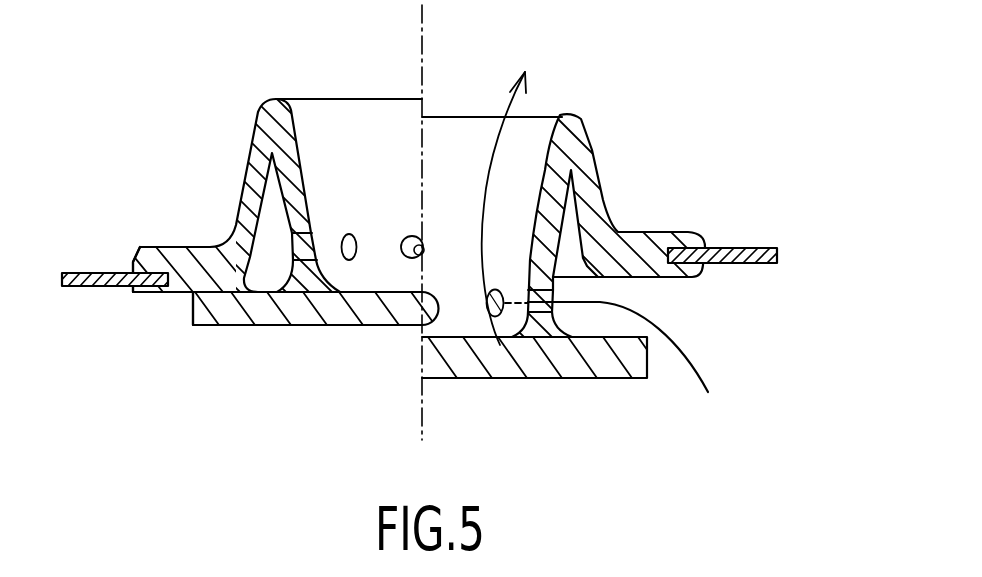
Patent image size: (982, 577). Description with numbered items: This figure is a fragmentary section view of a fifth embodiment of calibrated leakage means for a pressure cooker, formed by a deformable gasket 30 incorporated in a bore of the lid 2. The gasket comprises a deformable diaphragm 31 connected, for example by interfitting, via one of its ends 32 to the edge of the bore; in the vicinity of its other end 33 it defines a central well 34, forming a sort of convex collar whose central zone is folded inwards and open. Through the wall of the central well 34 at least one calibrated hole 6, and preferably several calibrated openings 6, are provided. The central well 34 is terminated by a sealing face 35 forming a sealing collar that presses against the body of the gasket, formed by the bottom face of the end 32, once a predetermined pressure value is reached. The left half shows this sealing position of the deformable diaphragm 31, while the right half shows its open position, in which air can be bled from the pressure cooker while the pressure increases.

The lid 2 is at (750, 248).
The calibrated opening 6 is at (316, 262).
The deformable gasket 30 is at (594, 106).
The deformable diaphragm 31 is at (243, 222).
The end 32 is at (140, 247).
The other end 33 is at (275, 332).
The central well 34 is at (352, 147).
The sealing face 35 is at (212, 313).